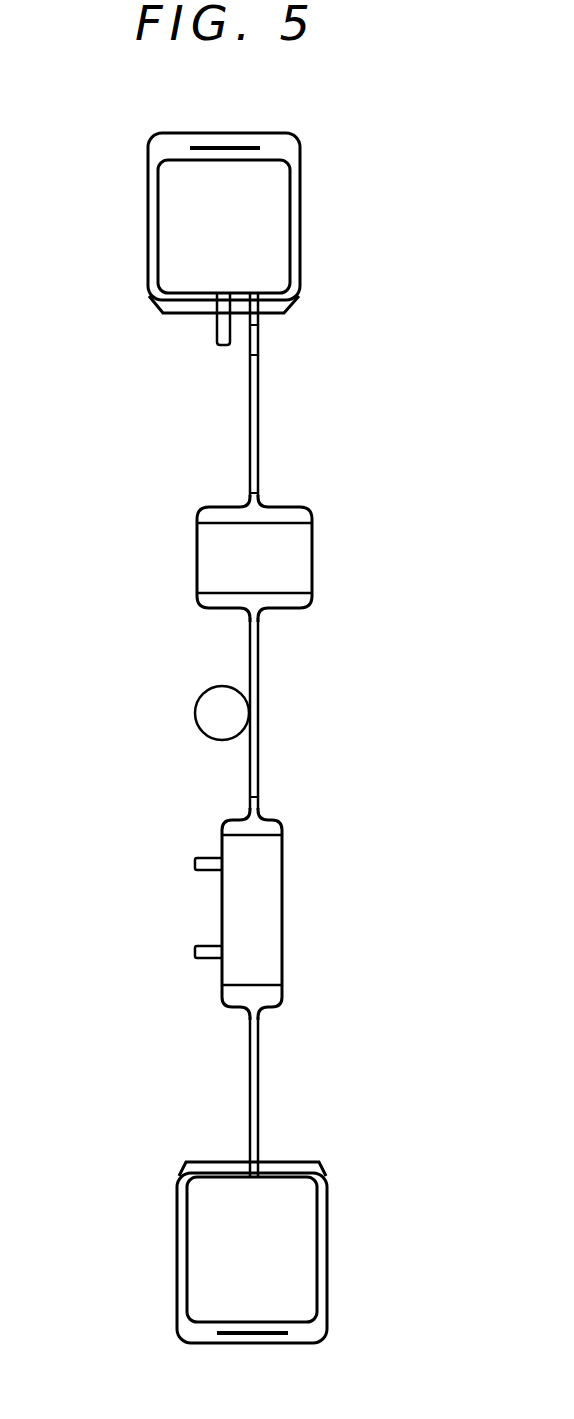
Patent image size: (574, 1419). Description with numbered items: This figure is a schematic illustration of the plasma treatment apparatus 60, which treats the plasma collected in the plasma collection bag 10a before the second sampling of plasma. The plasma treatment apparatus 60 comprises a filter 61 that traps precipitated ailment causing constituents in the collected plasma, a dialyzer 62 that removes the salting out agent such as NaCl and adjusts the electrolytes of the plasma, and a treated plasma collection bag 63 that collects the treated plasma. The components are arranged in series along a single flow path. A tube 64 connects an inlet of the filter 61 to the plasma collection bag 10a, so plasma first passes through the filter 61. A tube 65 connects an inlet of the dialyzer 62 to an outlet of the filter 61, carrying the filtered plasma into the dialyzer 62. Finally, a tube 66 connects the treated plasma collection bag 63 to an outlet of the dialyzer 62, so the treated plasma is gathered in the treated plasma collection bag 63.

The plasma collection bag 10a is at (270, 228).
The tube 64 is at (257, 397).
The filter 61 is at (298, 548).
The tube 65 is at (258, 750).
The plasma treatment apparatus 60 is at (156, 775).
The dialyzer 62 is at (282, 902).
The tube 66 is at (252, 1080).
The treated plasma collection bag 63 is at (283, 1245).